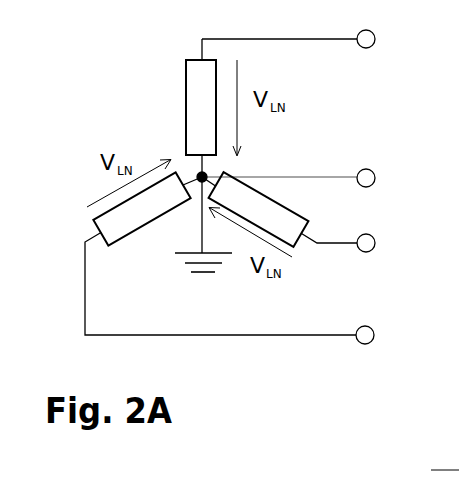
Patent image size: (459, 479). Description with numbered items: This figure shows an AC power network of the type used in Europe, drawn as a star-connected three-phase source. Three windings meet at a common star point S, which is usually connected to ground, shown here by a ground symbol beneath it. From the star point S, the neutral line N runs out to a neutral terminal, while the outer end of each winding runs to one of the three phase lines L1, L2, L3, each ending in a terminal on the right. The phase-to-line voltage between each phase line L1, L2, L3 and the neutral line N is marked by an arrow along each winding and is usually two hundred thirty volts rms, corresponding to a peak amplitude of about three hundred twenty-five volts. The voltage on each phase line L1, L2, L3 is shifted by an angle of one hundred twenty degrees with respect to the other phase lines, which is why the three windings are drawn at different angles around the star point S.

The star point S is at (200, 176).
The phase line L1 is at (293, 29).
The phase line L2 is at (344, 234).
The phase line L3 is at (235, 289).
The neutral line N is at (293, 169).